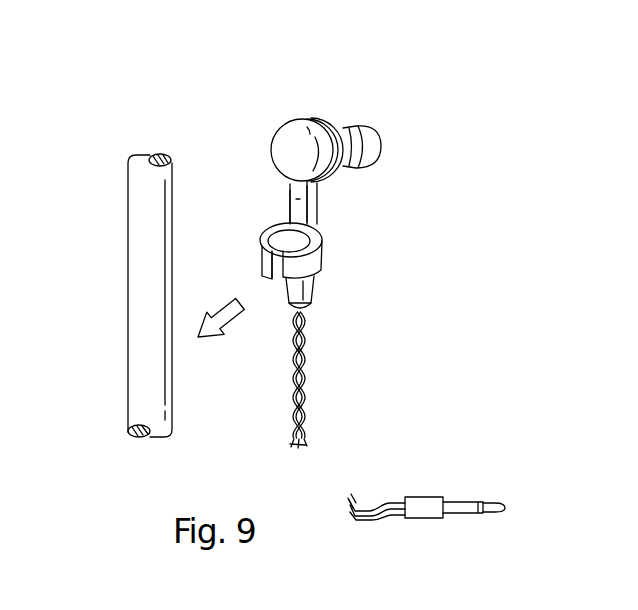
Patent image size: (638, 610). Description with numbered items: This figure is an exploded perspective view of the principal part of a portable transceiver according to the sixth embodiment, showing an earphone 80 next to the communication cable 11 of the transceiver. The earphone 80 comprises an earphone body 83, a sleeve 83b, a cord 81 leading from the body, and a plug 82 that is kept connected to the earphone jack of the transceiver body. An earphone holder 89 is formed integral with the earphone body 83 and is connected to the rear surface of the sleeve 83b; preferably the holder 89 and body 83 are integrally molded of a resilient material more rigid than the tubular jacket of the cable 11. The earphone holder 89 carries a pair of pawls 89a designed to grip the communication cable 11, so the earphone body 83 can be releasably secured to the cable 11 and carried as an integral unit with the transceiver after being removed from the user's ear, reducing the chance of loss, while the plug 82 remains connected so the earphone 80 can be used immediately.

The communication cable 11 is at (128, 312).
The earphone 80 is at (350, 187).
The cord 81 is at (300, 407).
The plug 82 is at (435, 497).
The earphone body 83 is at (333, 113).
The sleeve 83b is at (290, 207).
The earphone holder 89 is at (322, 252).
The pawls 89a is at (263, 265).